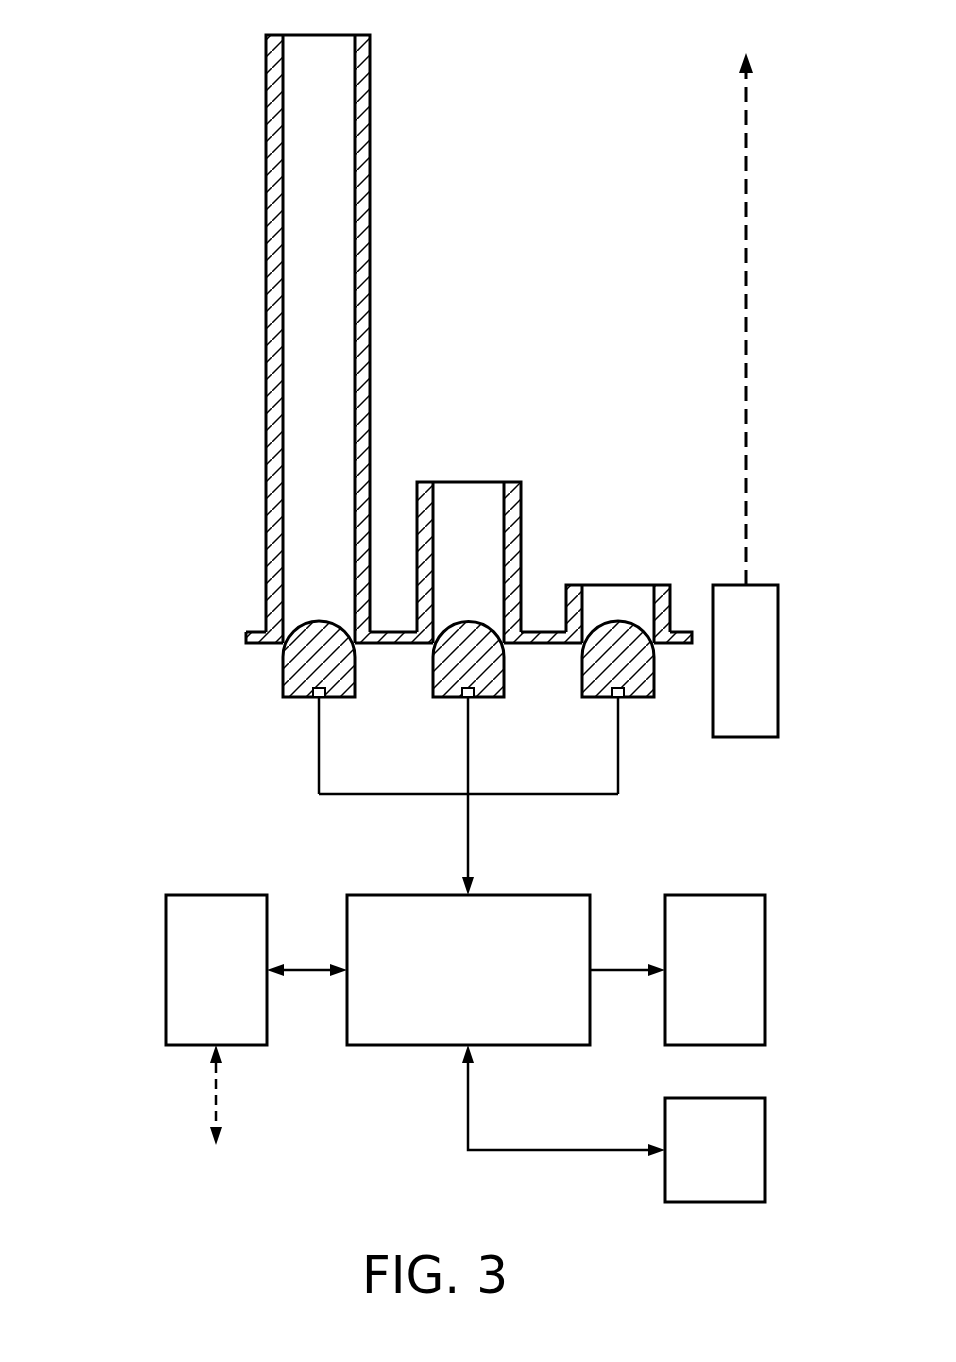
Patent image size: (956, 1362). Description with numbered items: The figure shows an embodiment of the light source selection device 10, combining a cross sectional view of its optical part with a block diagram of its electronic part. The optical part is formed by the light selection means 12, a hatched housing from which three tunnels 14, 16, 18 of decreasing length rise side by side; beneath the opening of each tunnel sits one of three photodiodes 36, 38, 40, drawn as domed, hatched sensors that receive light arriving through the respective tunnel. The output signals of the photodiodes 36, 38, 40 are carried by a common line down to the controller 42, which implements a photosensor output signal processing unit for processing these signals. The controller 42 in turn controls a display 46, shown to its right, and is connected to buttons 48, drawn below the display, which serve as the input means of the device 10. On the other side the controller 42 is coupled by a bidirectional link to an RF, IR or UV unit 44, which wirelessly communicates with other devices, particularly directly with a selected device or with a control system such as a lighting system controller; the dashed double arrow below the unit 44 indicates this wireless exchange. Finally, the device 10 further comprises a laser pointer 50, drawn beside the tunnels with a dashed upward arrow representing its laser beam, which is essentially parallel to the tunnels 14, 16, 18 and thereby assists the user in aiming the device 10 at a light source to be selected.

The light source selection device 10 is at (114, 84).
The light selection means 12 is at (521, 305).
The tunnel 14 is at (290, 91).
The tunnel 16 is at (471, 490).
The tunnel 18 is at (620, 598).
The photodiode 36 is at (290, 675).
The photodiode 38 is at (440, 675).
The photodiode 40 is at (590, 675).
The controller 42 is at (453, 985).
The RF, IR or UV unit 44 is at (201, 985).
The display 46 is at (700, 985).
The buttons 48 is at (700, 1168).
The laser pointer 50 is at (731, 676).